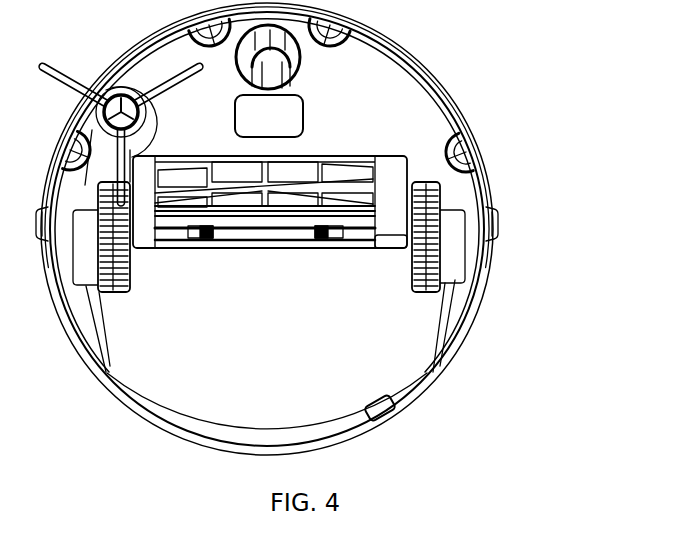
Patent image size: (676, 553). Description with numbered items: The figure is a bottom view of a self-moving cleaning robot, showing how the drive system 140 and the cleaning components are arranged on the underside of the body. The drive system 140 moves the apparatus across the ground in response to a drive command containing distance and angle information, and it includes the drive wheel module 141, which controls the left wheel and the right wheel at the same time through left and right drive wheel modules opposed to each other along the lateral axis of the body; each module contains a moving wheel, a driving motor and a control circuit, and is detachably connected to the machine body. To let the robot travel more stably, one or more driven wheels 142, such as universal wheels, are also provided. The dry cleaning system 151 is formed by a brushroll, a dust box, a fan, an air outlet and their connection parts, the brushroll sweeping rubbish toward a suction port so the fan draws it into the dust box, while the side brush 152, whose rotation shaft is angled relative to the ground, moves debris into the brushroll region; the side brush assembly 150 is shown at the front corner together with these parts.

The drive system 140 is at (527, 163).
The drive wheel module 141 is at (437, 183).
The driven wheel 142 is at (302, 68).
The side brush assembly 150 is at (87, 52).
The cleaning system 151 is at (119, 72).
The side brush 152 is at (240, 175).